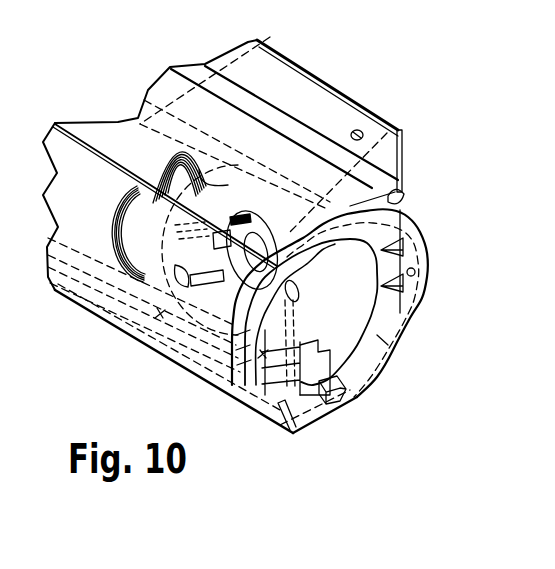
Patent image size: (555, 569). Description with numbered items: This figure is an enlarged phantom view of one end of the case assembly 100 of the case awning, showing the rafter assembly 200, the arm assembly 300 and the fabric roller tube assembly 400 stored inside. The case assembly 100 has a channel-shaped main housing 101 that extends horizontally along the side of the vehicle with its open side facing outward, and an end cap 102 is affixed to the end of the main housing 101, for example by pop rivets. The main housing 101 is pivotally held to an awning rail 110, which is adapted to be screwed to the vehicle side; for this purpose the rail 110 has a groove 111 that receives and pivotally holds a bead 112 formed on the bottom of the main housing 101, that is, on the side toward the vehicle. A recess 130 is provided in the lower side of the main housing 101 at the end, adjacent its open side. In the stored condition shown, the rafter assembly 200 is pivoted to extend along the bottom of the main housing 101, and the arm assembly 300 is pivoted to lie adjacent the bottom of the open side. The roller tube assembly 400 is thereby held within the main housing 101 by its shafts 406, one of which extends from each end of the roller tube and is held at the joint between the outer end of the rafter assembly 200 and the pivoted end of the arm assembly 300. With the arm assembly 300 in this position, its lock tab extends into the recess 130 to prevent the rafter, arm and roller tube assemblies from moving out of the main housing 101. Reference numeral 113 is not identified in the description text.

The case assembly 100 is at (118, 135).
The rafter assembly 200 is at (270, 37).
The awning rail 110 is at (297, 73).
The shaft 406 is at (387, 133).
The main housing 101 is at (423, 245).
The groove 111 is at (406, 192).
The bead 112 is at (400, 204).
The nub 113 is at (422, 270).
The end cap 102 is at (380, 338).
The recess 130 is at (356, 406).
The fabric roller tube assembly 400 is at (91, 232).
The arm assembly 300 is at (163, 312).